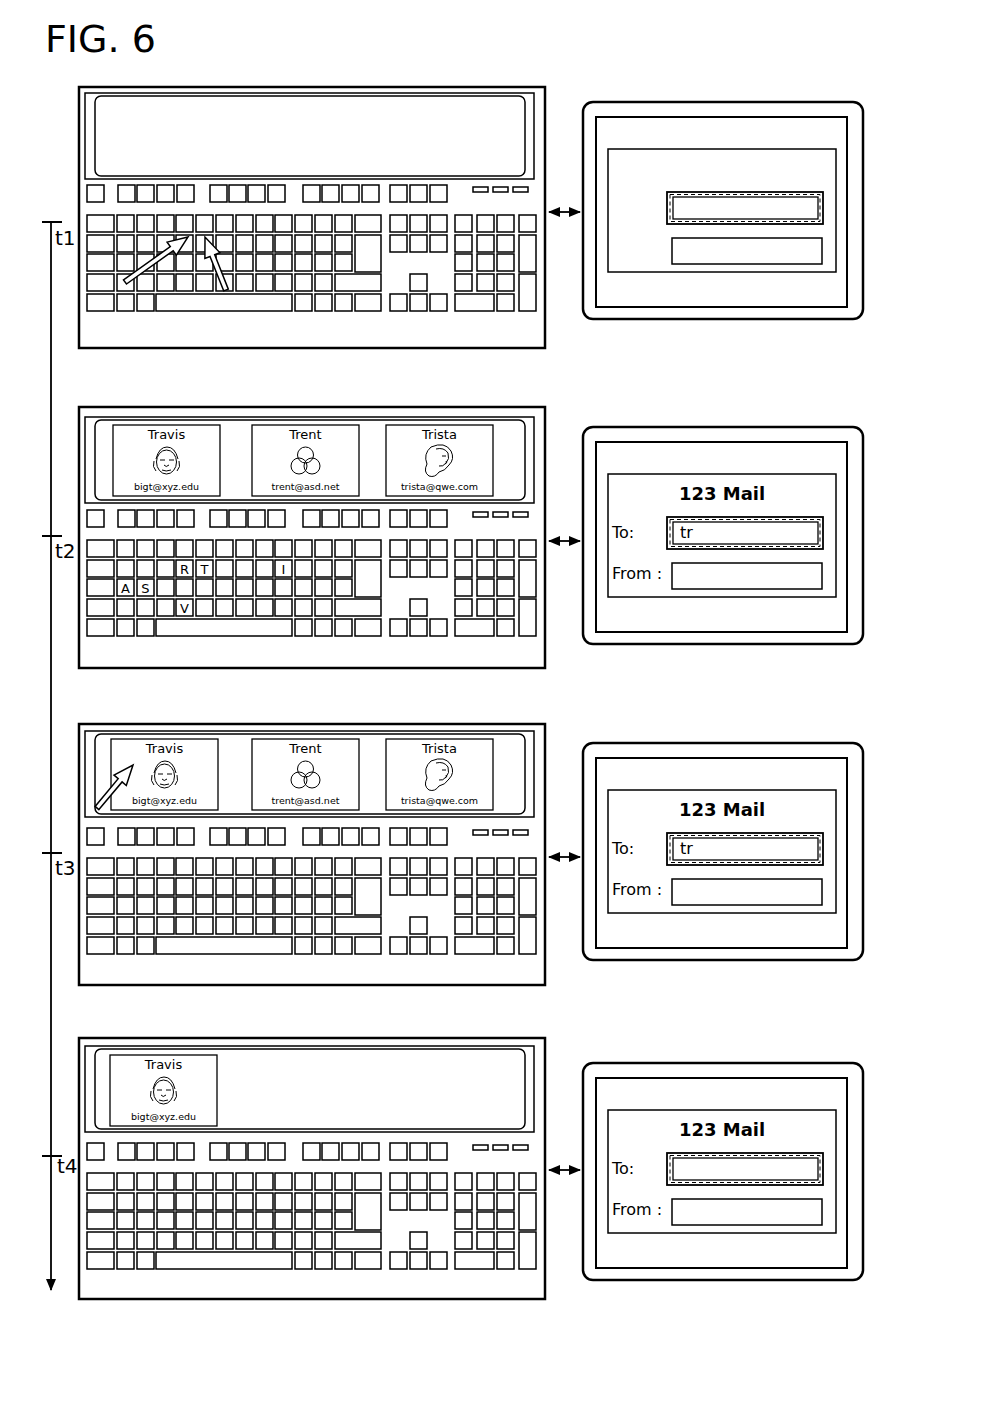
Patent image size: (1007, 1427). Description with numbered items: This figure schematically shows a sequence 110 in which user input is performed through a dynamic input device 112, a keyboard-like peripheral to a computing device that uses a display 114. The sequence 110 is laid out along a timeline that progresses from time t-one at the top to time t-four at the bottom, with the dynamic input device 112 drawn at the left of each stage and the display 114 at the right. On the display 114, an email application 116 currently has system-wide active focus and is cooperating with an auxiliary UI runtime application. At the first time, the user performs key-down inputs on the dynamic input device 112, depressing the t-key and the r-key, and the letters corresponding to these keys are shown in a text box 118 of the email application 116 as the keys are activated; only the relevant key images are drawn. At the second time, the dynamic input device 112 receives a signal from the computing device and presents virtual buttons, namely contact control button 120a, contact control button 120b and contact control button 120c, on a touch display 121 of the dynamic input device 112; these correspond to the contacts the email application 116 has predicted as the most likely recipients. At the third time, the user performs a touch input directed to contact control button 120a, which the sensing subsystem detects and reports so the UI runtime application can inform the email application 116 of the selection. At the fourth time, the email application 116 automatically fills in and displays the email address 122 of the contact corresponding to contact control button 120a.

The sequence 110 is at (573, 66).
The dynamic input device 112 is at (243, 85).
The display 114 is at (723, 191).
The email application 116 is at (722, 199).
The text box 118 is at (752, 210).
The contact control button 120a is at (172, 422).
The contact control button 120b is at (305, 422).
The contact control button 120c is at (432, 422).
The touch display 121 is at (526, 727).
The email address 122 is at (758, 1167).